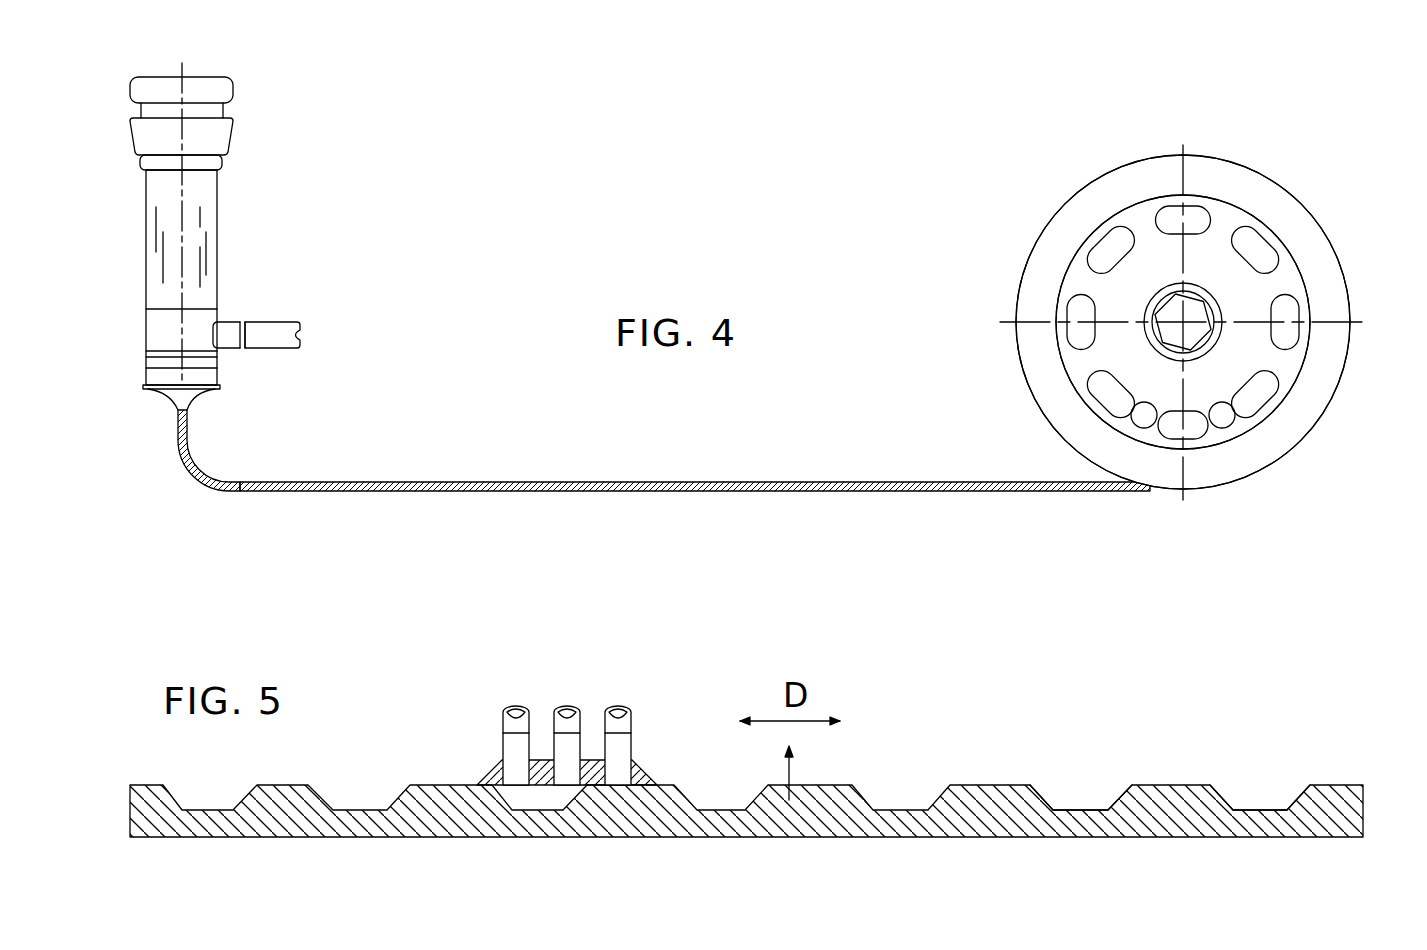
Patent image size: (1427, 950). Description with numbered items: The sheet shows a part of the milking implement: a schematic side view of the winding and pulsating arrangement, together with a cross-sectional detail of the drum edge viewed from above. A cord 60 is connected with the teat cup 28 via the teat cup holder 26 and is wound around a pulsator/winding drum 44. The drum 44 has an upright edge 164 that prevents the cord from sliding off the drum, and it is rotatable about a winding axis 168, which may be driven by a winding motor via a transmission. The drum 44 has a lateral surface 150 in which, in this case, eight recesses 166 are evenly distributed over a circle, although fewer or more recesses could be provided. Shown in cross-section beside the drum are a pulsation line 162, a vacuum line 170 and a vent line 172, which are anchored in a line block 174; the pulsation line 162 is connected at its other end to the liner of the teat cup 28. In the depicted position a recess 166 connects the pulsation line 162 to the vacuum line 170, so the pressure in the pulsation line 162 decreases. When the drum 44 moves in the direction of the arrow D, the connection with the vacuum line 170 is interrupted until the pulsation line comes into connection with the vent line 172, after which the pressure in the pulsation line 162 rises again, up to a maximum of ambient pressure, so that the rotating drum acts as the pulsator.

In FIG. 4, the teat cup holder 26 is at (187, 395).
In FIG. 4, the teat cup 28 is at (206, 184).
In FIG. 4, the pulsator/winding drum 44 is at (1180, 122).
In FIG. 4, the cord 60 is at (470, 486).
In FIG. 4, the lateral surface 150 is at (1086, 279).
In FIG. 4, the pulsation line 162 is at (268, 332).
In FIG. 5, the pulsation line 162 is at (567, 677).
In FIG. 4, the upright edge 164 is at (1076, 223).
In FIG. 5, the upright edge 164 is at (1320, 797).
In FIG. 4, the recess 166 is at (1197, 219).
In FIG. 5, the recess 166 is at (1265, 797).
In FIG. 4, the winding axis 168 is at (1183, 322).
In FIG. 4, the vacuum line 170 is at (1145, 416).
In FIG. 5, the vacuum line 170 is at (516, 677).
In FIG. 4, the vent line 172 is at (1222, 416).
In FIG. 5, the vent line 172 is at (618, 677).
In FIG. 5, the line block 174 is at (492, 772).